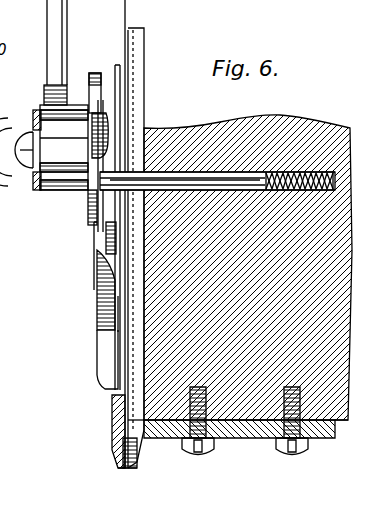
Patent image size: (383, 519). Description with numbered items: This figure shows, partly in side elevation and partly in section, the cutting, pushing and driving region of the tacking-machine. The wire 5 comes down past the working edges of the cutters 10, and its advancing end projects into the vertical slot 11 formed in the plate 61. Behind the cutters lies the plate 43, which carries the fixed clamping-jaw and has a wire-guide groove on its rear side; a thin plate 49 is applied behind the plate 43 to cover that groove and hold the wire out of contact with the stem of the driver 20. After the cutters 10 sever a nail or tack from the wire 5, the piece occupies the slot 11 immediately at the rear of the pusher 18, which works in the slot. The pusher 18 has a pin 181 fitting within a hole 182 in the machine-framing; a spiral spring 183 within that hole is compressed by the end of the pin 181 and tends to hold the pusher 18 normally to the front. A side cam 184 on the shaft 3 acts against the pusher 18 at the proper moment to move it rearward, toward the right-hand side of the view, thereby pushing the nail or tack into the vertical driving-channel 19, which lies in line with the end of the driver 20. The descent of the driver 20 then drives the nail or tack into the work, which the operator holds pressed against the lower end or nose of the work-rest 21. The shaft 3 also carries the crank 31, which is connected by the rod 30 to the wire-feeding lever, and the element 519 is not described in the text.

The shaft 3 is at (99, 135).
The wire 5 is at (119, 36).
The cutters 10 is at (107, 242).
The vertical slot 11 is at (121, 317).
The pusher 18 is at (97, 368).
The driving-channel 19 is at (120, 450).
The driver 20 is at (147, 31).
The work-rest 21 is at (140, 463).
The rod 30 is at (63, 27).
The crank 31 is at (79, 190).
The plate 43 is at (120, 102).
The thin plate 49 is at (126, 83).
The plate 61 is at (112, 421).
The pin 181 is at (213, 172).
The hole 182 is at (251, 172).
The spiral spring 183 is at (309, 172).
The side cam 184 is at (96, 78).
The link 519 is at (121, 318).